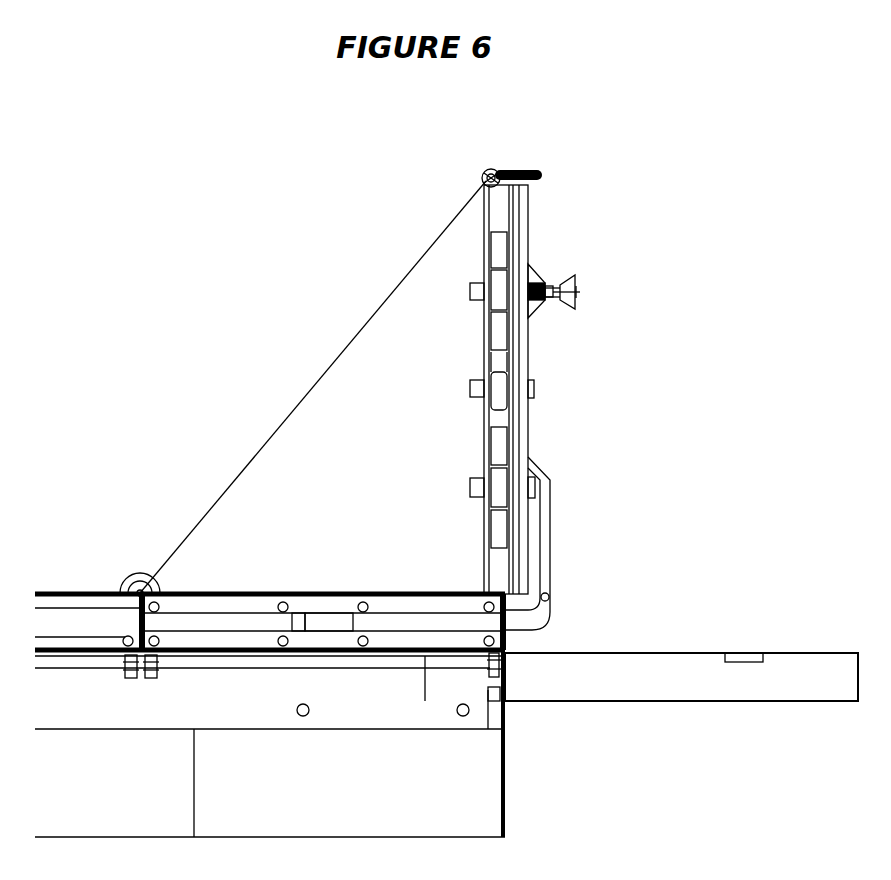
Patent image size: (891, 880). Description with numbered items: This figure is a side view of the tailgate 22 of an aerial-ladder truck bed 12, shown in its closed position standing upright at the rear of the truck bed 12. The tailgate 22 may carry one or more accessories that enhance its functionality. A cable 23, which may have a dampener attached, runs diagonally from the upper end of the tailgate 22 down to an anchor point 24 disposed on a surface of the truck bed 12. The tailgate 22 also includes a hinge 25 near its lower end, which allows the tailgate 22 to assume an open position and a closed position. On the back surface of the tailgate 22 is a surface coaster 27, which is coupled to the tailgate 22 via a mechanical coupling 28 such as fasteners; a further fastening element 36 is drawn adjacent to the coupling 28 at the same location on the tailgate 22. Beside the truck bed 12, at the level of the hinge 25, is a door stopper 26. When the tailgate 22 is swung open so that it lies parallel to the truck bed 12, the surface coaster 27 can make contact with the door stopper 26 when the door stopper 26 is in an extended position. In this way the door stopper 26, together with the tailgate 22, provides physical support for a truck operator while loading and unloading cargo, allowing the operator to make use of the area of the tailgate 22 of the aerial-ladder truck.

The truck bed 12 is at (328, 572).
The tailgate 22 is at (438, 400).
The cable 23 is at (311, 388).
The anchor point 24 is at (142, 578).
The hinge 25 is at (549, 597).
The door stopper 26 is at (623, 688).
The surface coaster 27 is at (573, 250).
The mechanical coupling 28 is at (566, 305).
The hub 36 is at (535, 310).